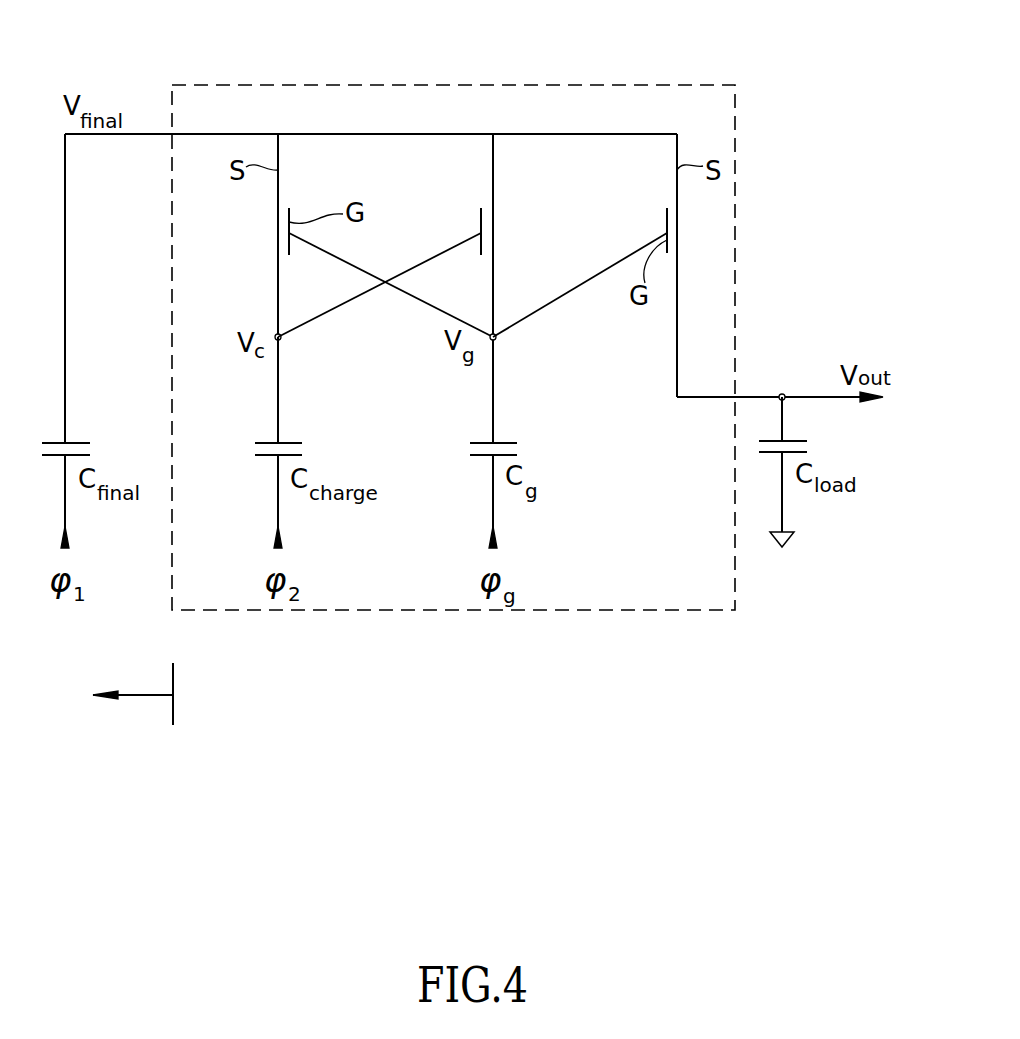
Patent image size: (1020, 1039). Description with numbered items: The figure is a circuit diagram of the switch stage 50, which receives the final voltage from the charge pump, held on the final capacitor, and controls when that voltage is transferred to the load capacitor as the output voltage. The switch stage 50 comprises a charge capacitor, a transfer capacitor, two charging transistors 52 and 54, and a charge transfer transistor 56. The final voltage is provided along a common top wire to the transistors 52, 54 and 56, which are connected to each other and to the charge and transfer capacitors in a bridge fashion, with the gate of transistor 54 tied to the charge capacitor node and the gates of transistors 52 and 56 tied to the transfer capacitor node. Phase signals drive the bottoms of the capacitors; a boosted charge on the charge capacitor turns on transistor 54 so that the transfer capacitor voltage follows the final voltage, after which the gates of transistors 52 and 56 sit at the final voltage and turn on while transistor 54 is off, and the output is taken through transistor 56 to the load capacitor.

The switch stage 50 is at (690, 610).
The charging transistor 52 is at (152, 752).
The charging transistor 54 is at (387, 288).
The charge transfer transistor 56 is at (585, 265).